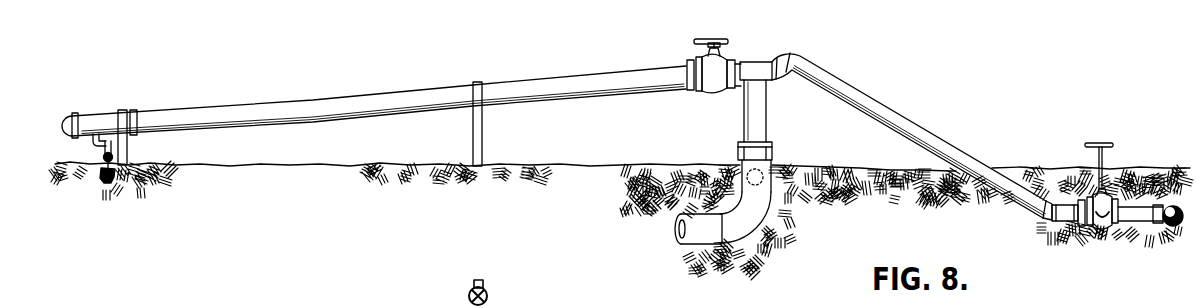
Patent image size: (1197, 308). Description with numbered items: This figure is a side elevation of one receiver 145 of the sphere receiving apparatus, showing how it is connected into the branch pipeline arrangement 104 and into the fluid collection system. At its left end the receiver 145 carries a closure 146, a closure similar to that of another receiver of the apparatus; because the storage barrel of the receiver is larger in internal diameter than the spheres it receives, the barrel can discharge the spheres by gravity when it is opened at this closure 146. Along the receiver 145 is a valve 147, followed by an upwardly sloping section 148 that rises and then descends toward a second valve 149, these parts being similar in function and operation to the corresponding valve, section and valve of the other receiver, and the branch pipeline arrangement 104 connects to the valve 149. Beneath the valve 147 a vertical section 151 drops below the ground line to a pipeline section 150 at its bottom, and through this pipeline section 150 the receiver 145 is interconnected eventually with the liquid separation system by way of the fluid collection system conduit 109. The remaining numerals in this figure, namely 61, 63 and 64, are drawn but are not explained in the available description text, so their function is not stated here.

The receiver 145 is at (313, 101).
The closure 146 is at (59, 118).
The valve 147 is at (728, 53).
The upwardly sloping section 148 is at (818, 65).
The valve 149 is at (1103, 196).
The pipeline section 150 is at (712, 169).
The vertical section 151 is at (766, 118).
The fluid collection system conduit 109 is at (744, 221).
The branch pipeline arrangement 104 is at (1166, 226).
The pipe 64 is at (418, 307).
The valve 63 is at (486, 281).
The pipe 61 is at (697, 303).